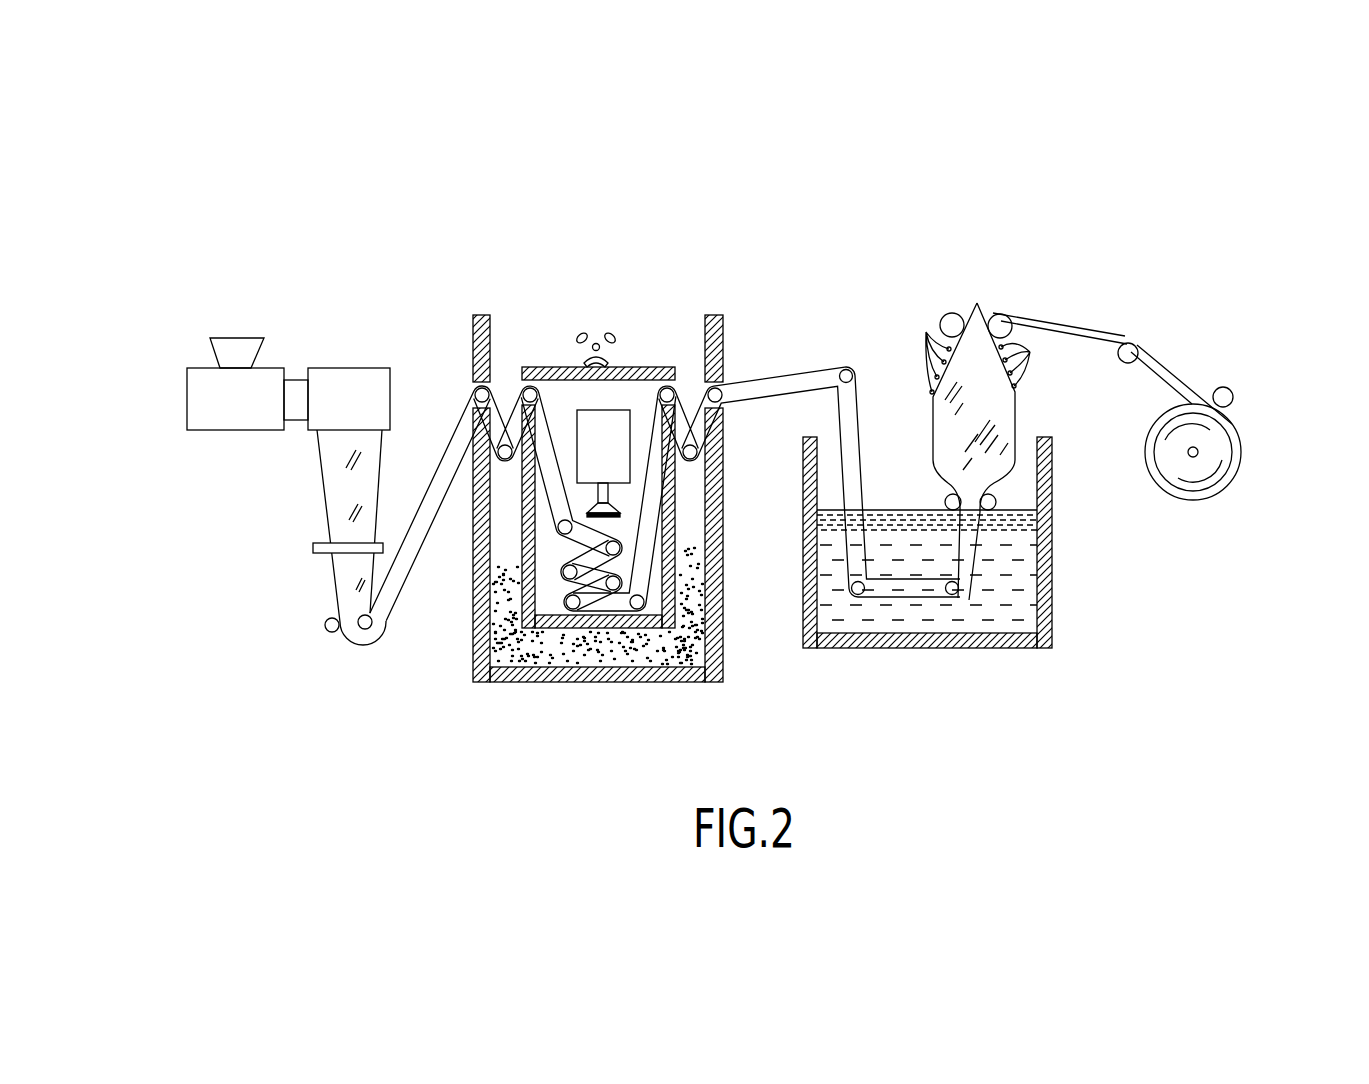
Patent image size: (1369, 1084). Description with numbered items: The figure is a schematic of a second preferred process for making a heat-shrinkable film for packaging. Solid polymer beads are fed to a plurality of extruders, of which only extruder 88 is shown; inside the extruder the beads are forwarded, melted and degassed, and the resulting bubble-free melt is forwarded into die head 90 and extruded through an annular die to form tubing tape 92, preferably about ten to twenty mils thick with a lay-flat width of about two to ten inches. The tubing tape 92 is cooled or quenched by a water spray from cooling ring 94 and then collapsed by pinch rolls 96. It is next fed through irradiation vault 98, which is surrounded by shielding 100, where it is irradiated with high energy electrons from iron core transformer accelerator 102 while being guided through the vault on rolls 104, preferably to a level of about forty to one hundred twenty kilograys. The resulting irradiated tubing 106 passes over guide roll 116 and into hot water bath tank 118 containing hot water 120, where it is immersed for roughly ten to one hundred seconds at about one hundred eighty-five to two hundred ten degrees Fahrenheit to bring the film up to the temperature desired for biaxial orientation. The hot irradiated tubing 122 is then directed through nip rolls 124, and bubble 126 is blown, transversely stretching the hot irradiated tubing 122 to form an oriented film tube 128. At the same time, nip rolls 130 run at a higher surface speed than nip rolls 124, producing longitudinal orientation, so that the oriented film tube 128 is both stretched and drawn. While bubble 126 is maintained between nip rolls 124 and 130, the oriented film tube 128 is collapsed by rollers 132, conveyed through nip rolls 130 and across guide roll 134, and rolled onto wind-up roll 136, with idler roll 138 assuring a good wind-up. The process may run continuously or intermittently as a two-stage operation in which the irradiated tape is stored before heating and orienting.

The extruder 88 is at (187, 405).
The die head 90 is at (350, 383).
The tubing tape 92 is at (323, 453).
The cooling ring 94 is at (313, 541).
The pinch rolls 96 is at (327, 619).
The irradiation vault 98 is at (677, 545).
The shielding 100 is at (560, 650).
The iron core transformer accelerator 102 is at (587, 408).
The rolls 104 is at (560, 602).
The irradiated tubing 106 is at (758, 372).
The guide roll 116 is at (838, 360).
The hot water bath tank 118 is at (1057, 598).
The hot water 120 is at (1023, 553).
The hot irradiated tubing 122 is at (1003, 393).
The nip rolls 124 is at (948, 497).
The bubble 126 is at (1017, 420).
The oriented film tube 128 is at (1090, 320).
The nip rolls 130 is at (956, 313).
The rollers 132 is at (926, 332).
The guide roll 134 is at (1137, 345).
The wind-up roll 136 is at (1243, 452).
The idler roll 138 is at (1233, 393).